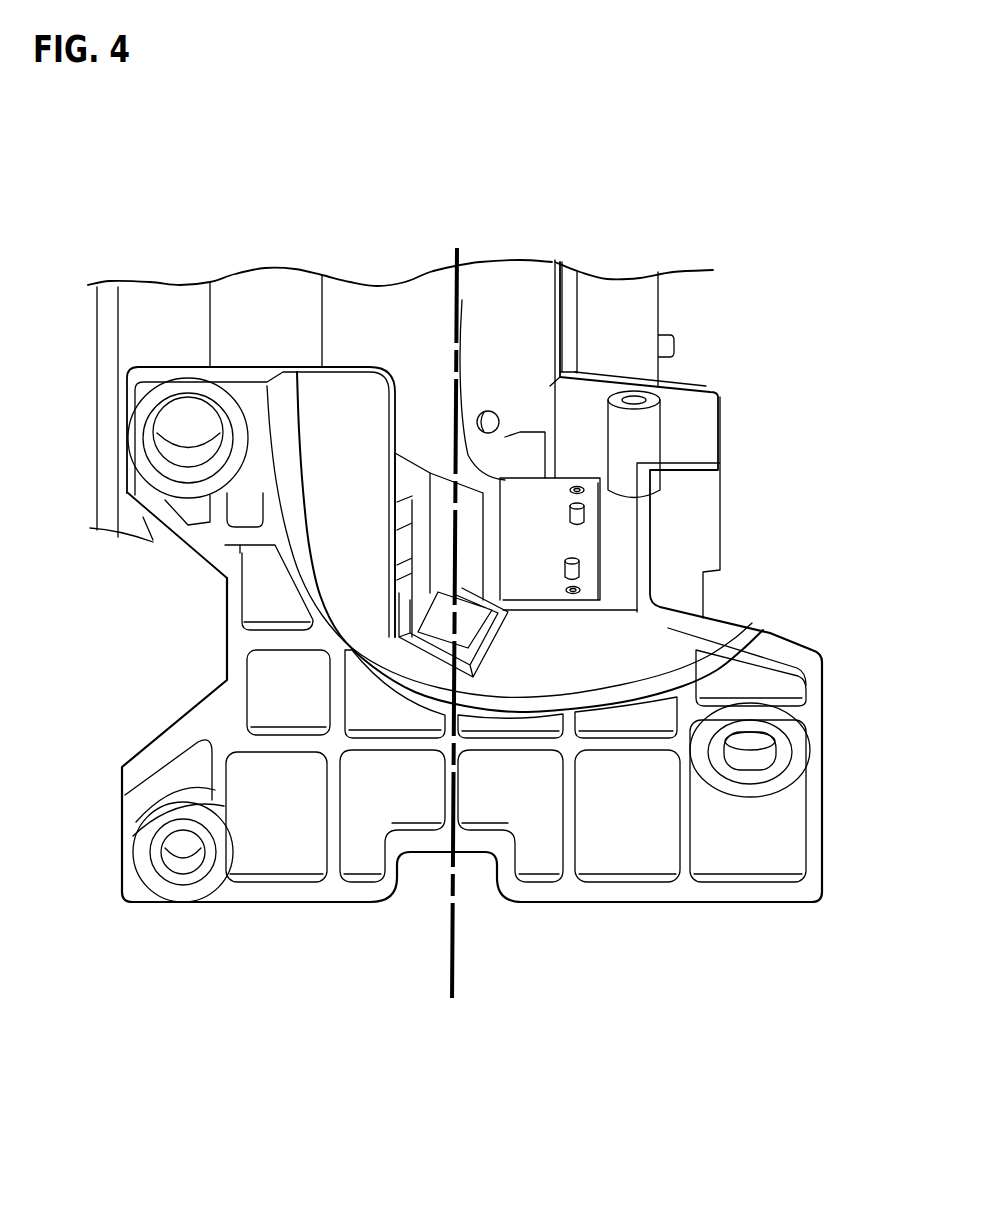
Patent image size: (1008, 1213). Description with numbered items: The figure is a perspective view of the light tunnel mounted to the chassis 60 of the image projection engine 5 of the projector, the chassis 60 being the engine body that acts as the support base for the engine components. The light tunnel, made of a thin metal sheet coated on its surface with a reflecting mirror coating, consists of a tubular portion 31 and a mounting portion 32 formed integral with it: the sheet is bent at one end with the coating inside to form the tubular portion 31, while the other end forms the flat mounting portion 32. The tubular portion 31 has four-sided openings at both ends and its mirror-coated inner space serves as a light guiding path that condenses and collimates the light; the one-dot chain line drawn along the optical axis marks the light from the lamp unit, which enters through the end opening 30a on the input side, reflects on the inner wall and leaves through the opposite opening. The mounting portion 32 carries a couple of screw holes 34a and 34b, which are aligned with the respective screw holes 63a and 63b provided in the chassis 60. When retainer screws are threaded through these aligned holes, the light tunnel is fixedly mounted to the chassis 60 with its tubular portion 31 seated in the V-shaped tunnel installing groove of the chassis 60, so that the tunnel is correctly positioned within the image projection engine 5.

The image projection engine 5 is at (400, 216).
The chassis 60 is at (124, 310).
The tubular portion 31 is at (458, 318).
The mounting portion 32 is at (526, 500).
The screw hole 34a is at (584, 590).
The screw hole 34b is at (585, 490).
The screw hole 63a is at (585, 568).
The screw hole 63b is at (592, 512).
The end opening 30a is at (455, 612).